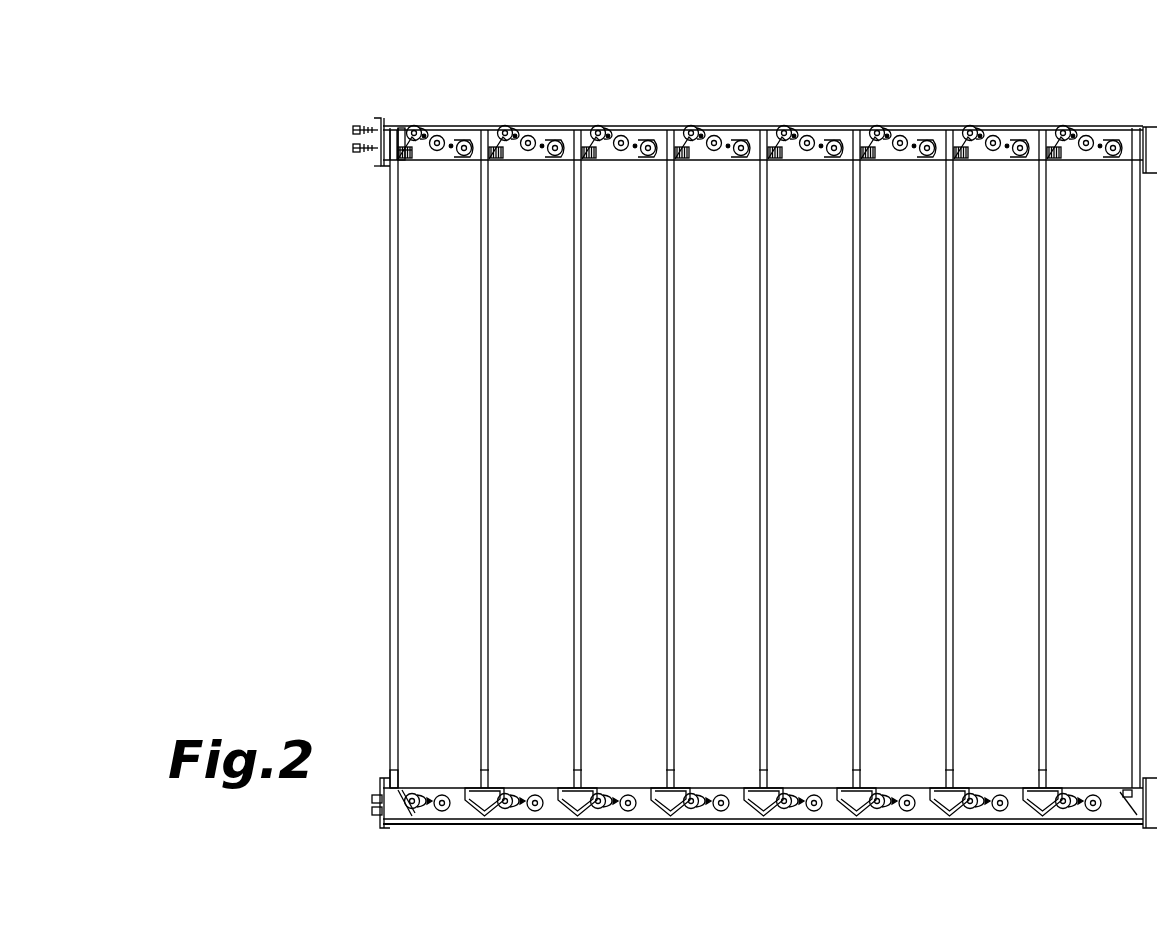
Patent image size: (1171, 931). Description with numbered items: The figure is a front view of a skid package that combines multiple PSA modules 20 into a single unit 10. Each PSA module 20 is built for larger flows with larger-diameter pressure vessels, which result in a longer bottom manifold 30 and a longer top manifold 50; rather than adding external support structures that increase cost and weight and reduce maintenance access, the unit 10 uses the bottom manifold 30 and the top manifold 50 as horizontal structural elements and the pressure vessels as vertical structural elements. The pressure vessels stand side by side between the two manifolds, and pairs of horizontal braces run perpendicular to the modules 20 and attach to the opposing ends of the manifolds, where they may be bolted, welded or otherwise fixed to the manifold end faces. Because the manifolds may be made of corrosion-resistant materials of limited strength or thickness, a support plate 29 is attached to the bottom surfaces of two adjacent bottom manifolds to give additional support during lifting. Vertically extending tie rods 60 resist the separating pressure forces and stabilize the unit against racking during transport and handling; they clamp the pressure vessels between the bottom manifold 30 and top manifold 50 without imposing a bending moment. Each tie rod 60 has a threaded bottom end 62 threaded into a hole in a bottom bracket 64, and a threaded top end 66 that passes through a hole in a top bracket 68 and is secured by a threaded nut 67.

The single unit 10 is at (855, 110).
The PSA module 20 is at (540, 126).
The support plate 29 is at (1058, 832).
The bottom manifold 30 is at (835, 815).
The top manifold 50 is at (727, 133).
The tie rod 60 is at (392, 458).
The threaded bottom end 62 is at (393, 775).
The bottom bracket 64 is at (400, 790).
The threaded top end 66 is at (393, 128).
The threaded nut 67 is at (399, 152).
The top bracket 68 is at (393, 157).